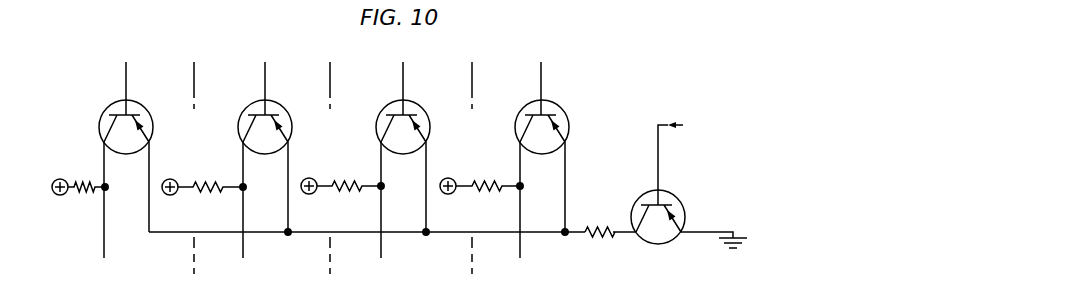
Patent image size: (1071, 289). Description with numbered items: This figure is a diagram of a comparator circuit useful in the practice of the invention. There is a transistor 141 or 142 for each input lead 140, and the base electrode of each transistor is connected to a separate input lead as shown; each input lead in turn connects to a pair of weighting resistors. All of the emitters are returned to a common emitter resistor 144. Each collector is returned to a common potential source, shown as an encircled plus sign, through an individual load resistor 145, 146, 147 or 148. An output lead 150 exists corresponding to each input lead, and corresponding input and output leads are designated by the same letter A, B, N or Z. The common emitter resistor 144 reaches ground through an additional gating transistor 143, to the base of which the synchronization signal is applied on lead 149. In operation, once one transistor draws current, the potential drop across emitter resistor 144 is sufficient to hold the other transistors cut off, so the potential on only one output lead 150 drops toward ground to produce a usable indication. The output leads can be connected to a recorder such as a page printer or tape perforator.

The input lead 140 is at (568, 50).
The transistor 141 is at (239, 125).
The transistor 142 is at (516, 125).
The gating transistor 143 is at (666, 195).
The common emitter resistor 144 is at (596, 227).
The load resistor 145 is at (485, 199).
The load resistor 146 is at (345, 199).
The load resistor 147 is at (208, 199).
The load resistor 148 is at (81, 199).
The lead 149 is at (664, 124).
The output lead 150 is at (536, 266).